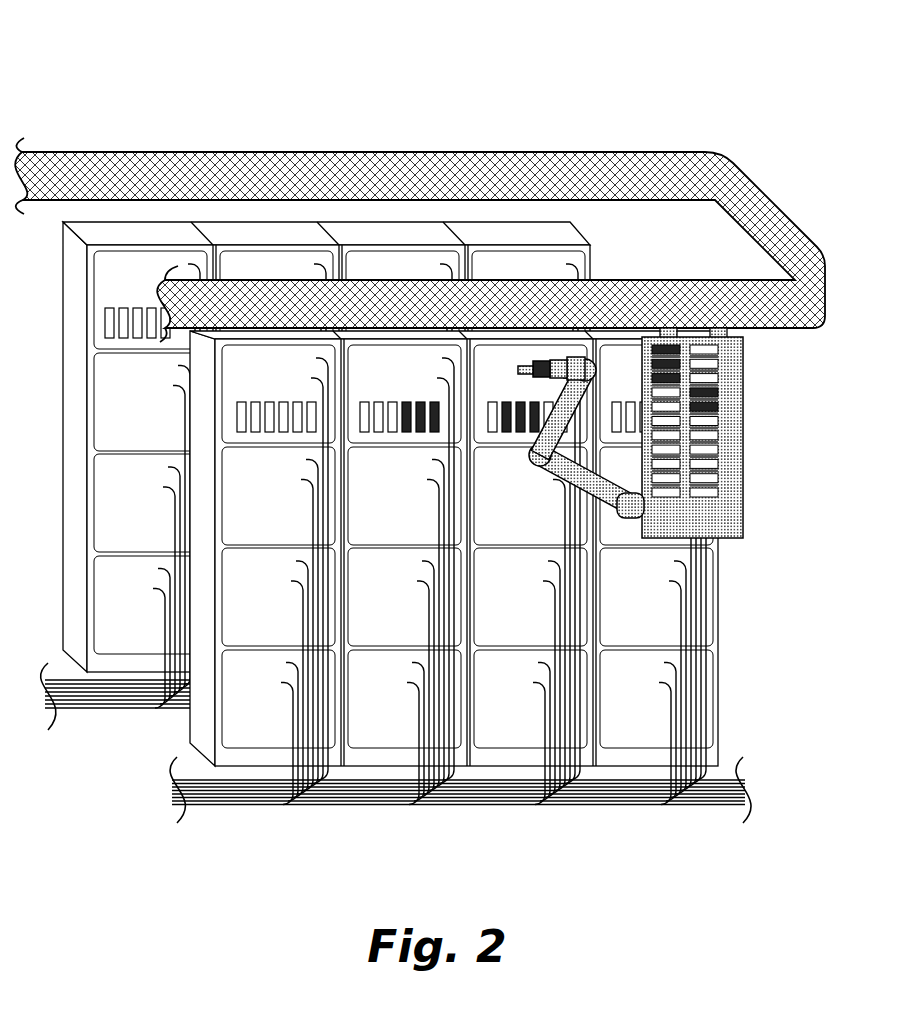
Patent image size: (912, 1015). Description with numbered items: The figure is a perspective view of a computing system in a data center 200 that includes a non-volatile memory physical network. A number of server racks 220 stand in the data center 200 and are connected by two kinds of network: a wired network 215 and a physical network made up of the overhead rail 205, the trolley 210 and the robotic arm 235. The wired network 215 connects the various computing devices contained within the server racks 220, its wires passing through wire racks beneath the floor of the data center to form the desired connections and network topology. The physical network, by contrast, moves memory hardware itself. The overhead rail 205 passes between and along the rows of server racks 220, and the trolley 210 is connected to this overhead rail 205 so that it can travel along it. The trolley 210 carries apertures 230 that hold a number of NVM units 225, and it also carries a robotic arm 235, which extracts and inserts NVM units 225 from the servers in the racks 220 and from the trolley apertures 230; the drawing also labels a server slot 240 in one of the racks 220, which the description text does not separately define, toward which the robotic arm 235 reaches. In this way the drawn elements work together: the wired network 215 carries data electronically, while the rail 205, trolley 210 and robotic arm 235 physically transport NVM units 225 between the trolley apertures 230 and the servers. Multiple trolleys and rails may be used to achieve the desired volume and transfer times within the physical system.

The data center 200 is at (134, 88).
The overhead rail 205 is at (306, 185).
The trolley 210 is at (726, 433).
The wired network 215 is at (518, 804).
The server racks 220 is at (454, 568).
The NVM units 225 is at (718, 405).
The apertures 230 is at (718, 449).
The robotic arm 235 is at (560, 478).
The media slot / drive bay 240 is at (492, 399).